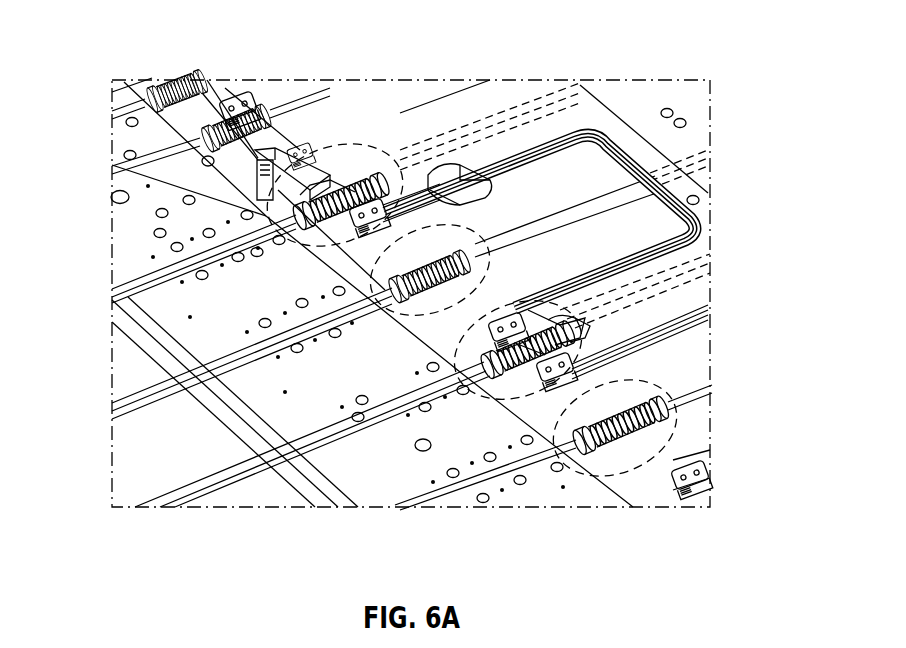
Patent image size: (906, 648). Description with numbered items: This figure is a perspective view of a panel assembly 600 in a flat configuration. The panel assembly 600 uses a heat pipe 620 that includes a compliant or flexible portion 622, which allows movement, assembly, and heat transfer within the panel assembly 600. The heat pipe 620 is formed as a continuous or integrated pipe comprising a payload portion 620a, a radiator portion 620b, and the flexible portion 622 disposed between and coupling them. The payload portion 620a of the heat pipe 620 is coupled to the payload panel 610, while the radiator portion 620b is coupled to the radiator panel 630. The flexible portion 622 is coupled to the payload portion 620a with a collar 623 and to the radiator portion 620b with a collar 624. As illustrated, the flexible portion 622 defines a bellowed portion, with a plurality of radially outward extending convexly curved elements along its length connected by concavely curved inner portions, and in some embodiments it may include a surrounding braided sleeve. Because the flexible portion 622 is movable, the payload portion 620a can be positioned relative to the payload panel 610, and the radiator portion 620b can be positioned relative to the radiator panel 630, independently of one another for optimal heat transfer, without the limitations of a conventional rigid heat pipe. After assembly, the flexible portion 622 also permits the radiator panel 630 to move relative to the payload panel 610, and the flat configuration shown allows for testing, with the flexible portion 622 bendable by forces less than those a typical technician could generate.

The panel assembly 600 is at (123, 67).
The payload panel 610 is at (690, 100).
The heat pipe 620 is at (135, 397).
The payload portion 620a is at (576, 100).
The radiator portion 620b is at (125, 290).
The flexible portion 622 is at (362, 178).
The collar 623 is at (400, 152).
The collar 624 is at (318, 165).
The radiator panel 630 is at (140, 452).